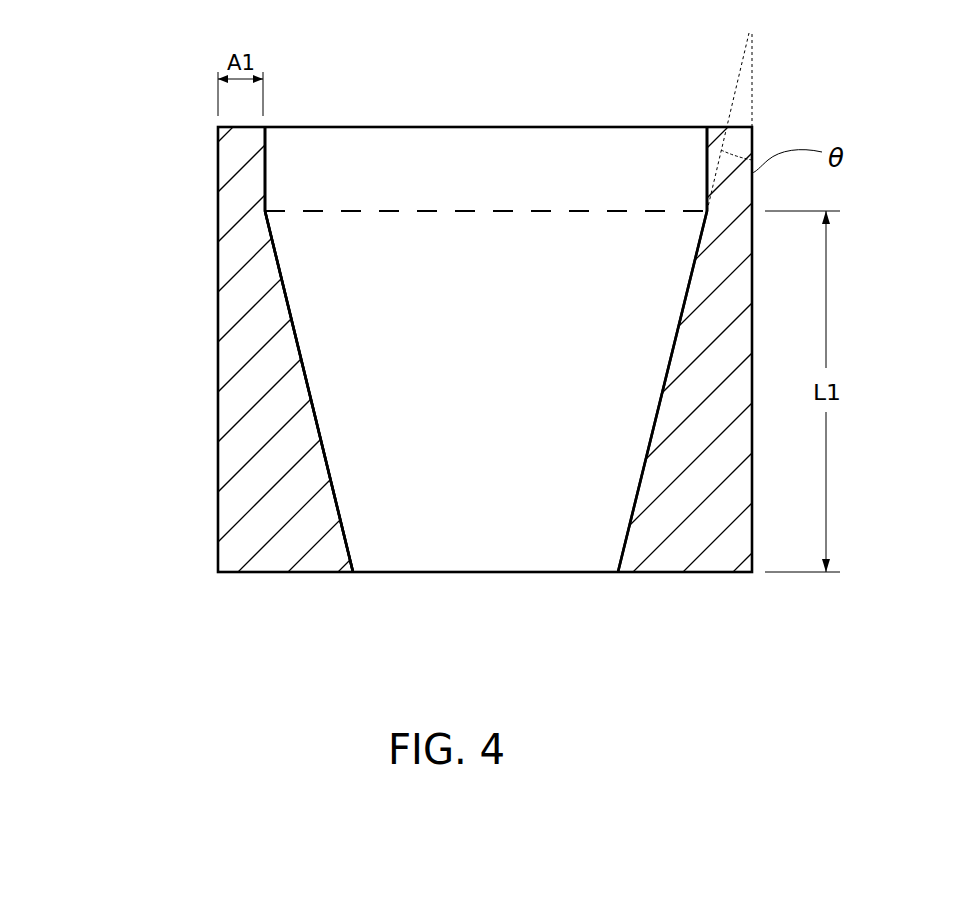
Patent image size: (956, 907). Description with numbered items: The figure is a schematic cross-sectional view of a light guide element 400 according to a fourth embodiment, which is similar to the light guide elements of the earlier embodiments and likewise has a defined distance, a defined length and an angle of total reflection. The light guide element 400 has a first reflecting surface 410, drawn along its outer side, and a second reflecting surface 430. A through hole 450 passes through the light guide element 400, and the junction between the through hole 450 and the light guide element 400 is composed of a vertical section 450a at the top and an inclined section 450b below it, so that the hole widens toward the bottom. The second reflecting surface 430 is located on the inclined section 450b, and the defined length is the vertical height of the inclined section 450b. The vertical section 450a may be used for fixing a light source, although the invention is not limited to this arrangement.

The light guide element 400 is at (165, 85).
The first reflecting surface 410 is at (217, 413).
The second reflecting surface 430 is at (280, 278).
The through hole 450 is at (451, 492).
The vertical section 450a is at (265, 176).
The inclined section 450b is at (630, 505).